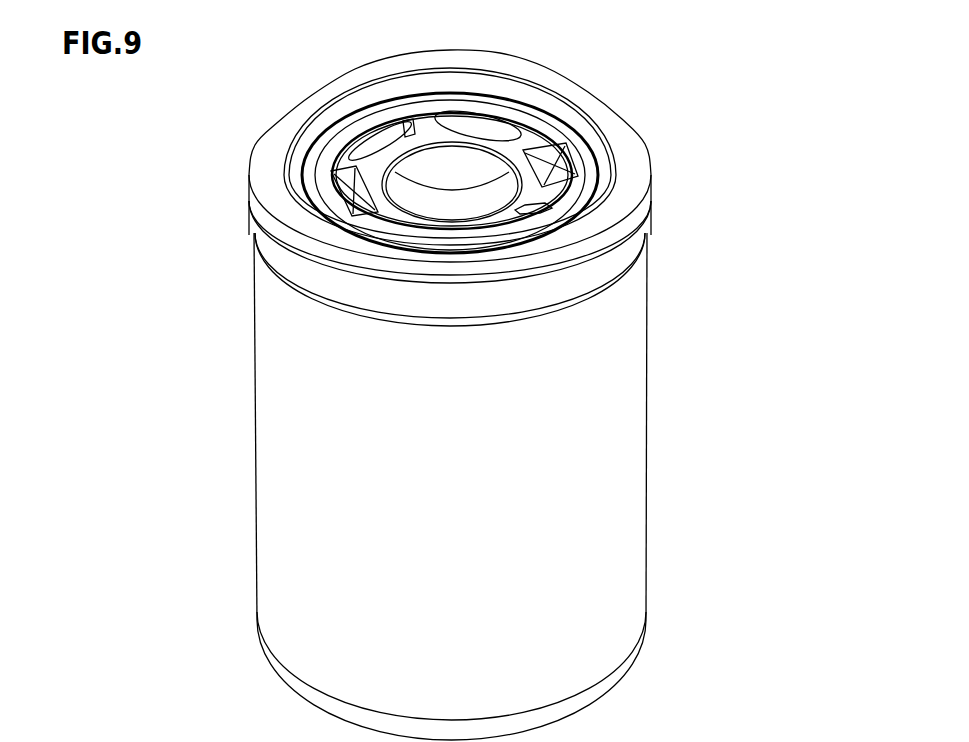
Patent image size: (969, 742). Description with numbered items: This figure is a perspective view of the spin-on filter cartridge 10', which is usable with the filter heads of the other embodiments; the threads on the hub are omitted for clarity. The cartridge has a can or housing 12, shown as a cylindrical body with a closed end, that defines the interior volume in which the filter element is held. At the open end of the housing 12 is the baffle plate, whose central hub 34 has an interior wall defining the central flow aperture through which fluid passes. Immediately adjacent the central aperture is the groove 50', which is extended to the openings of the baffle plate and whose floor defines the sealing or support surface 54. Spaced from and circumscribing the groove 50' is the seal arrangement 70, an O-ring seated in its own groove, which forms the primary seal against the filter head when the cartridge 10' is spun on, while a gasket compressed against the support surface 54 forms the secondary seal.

The filter cartridge 10' is at (554, 378).
The housing 12 is at (646, 452).
The seal arrangement 70 is at (410, 85).
The support surface 54 is at (425, 125).
The groove 50' is at (490, 123).
The central hub 34 is at (432, 180).